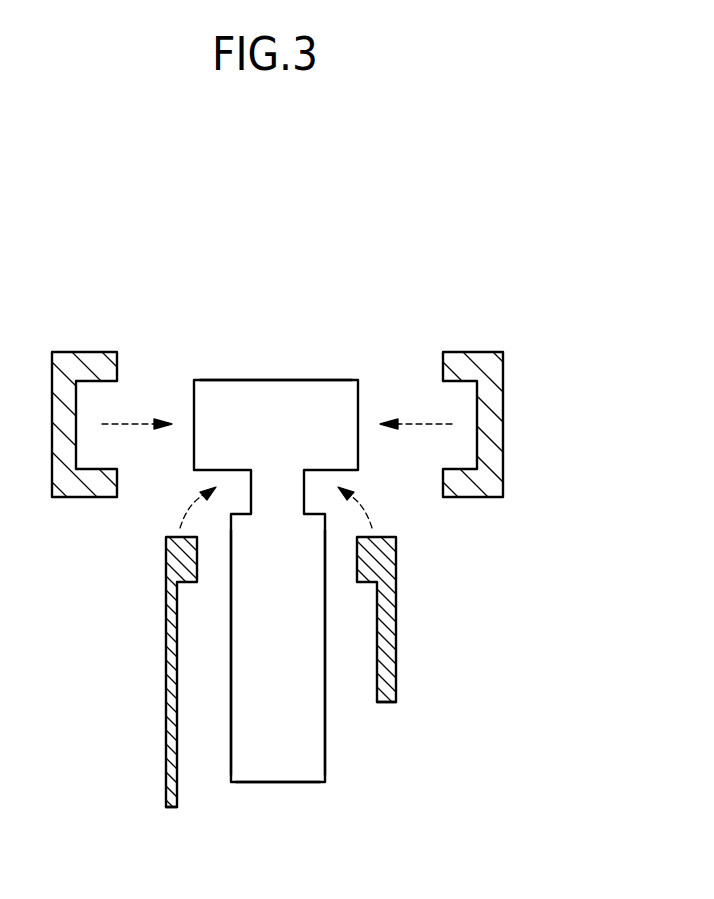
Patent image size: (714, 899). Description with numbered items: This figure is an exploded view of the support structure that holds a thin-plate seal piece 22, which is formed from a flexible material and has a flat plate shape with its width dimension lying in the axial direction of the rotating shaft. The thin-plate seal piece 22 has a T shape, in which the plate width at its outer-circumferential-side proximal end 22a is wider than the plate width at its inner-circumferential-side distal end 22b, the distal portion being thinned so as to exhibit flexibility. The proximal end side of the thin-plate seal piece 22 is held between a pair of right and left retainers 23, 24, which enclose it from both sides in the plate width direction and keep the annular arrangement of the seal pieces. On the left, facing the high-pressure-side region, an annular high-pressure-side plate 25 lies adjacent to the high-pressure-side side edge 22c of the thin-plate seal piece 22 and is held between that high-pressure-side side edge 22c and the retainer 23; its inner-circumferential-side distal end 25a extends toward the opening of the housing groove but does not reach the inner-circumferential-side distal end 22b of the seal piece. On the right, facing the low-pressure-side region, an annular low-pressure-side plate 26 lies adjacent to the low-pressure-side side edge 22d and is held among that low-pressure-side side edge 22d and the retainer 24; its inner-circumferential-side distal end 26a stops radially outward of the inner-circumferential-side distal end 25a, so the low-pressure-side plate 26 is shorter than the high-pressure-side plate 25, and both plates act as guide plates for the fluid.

The thin-plate seal piece 22 is at (258, 380).
The outer-circumferential-side proximal end 22a is at (315, 380).
The inner-circumferential-side distal end 22b is at (272, 783).
The high-pressure-side side edge 22c is at (232, 755).
The low-pressure-side side edge 22d is at (325, 755).
The retainer 23 is at (75, 352).
The retainer 24 is at (473, 352).
The high-pressure-side plate 25 is at (166, 650).
The inner-circumferential-side distal end 25a is at (168, 808).
The low-pressure-side plate 26 is at (396, 605).
The inner-circumferential-side distal end 26a is at (383, 703).